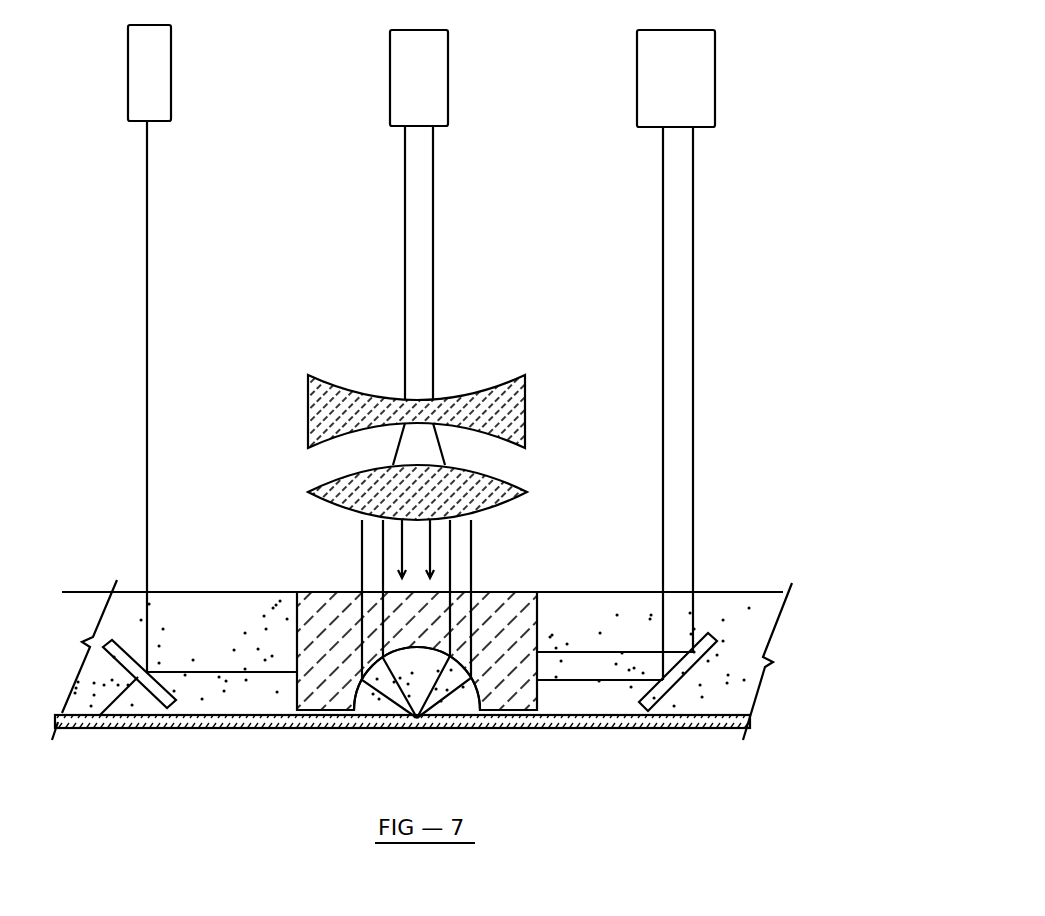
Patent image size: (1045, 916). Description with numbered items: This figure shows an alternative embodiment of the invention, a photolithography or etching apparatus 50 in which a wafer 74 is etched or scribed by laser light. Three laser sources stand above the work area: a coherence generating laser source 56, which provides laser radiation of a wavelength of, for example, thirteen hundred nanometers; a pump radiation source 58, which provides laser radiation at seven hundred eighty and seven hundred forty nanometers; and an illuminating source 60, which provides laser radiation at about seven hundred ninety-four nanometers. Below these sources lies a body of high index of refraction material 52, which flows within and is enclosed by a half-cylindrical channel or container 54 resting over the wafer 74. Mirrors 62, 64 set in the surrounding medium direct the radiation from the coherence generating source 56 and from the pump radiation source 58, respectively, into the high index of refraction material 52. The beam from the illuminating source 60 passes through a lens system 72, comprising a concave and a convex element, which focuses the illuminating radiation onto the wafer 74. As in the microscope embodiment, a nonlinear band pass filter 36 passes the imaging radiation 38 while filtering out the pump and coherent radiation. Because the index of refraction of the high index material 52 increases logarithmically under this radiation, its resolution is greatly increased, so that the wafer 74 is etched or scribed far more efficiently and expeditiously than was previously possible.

The coherence generating laser source 56 is at (125, 62).
The illuminating source 60 is at (385, 50).
The pump radiation source 58 is at (633, 60).
The photolithography or etching apparatus 50 is at (772, 170).
The imaging radiation 38 is at (692, 487).
The nonlinear band pass filter 36 is at (543, 600).
The lens system 72 is at (527, 380).
The high index of refraction material 52 is at (348, 722).
The half-cylindrical channel or container 54 is at (413, 648).
The wafer 74 is at (528, 728).
The mirror 62 is at (87, 727).
The mirror 64 is at (693, 668).